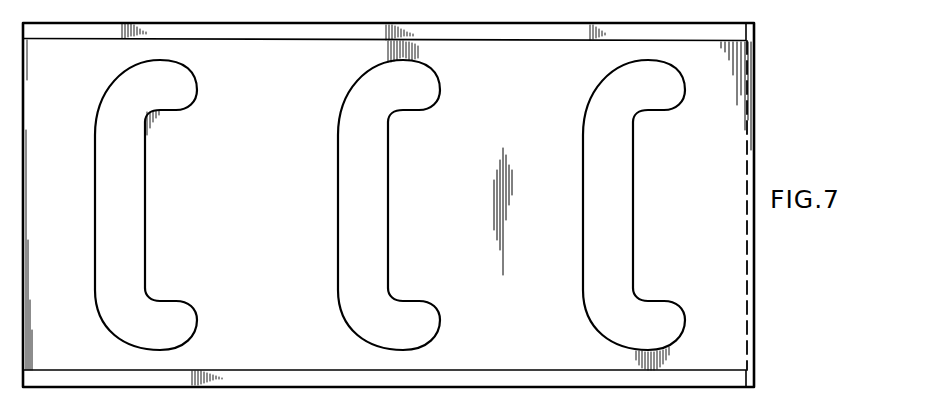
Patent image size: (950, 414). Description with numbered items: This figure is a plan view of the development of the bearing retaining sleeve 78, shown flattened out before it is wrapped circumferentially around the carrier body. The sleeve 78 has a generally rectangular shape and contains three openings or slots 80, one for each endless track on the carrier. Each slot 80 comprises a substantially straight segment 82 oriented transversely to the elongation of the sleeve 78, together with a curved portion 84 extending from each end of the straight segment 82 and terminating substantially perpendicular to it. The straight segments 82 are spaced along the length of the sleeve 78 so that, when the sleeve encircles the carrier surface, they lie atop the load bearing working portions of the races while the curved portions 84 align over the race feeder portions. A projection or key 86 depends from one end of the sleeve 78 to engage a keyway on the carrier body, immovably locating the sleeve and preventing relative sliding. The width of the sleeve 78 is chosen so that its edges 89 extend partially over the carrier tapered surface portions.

The retaining sleeve 78 is at (731, 305).
The opening or slot 80 is at (385, 205).
The straight segment 82 is at (146, 185).
The curved portion 84 is at (127, 75).
The projection or key 86 is at (750, 345).
The edges 89 is at (571, 5).